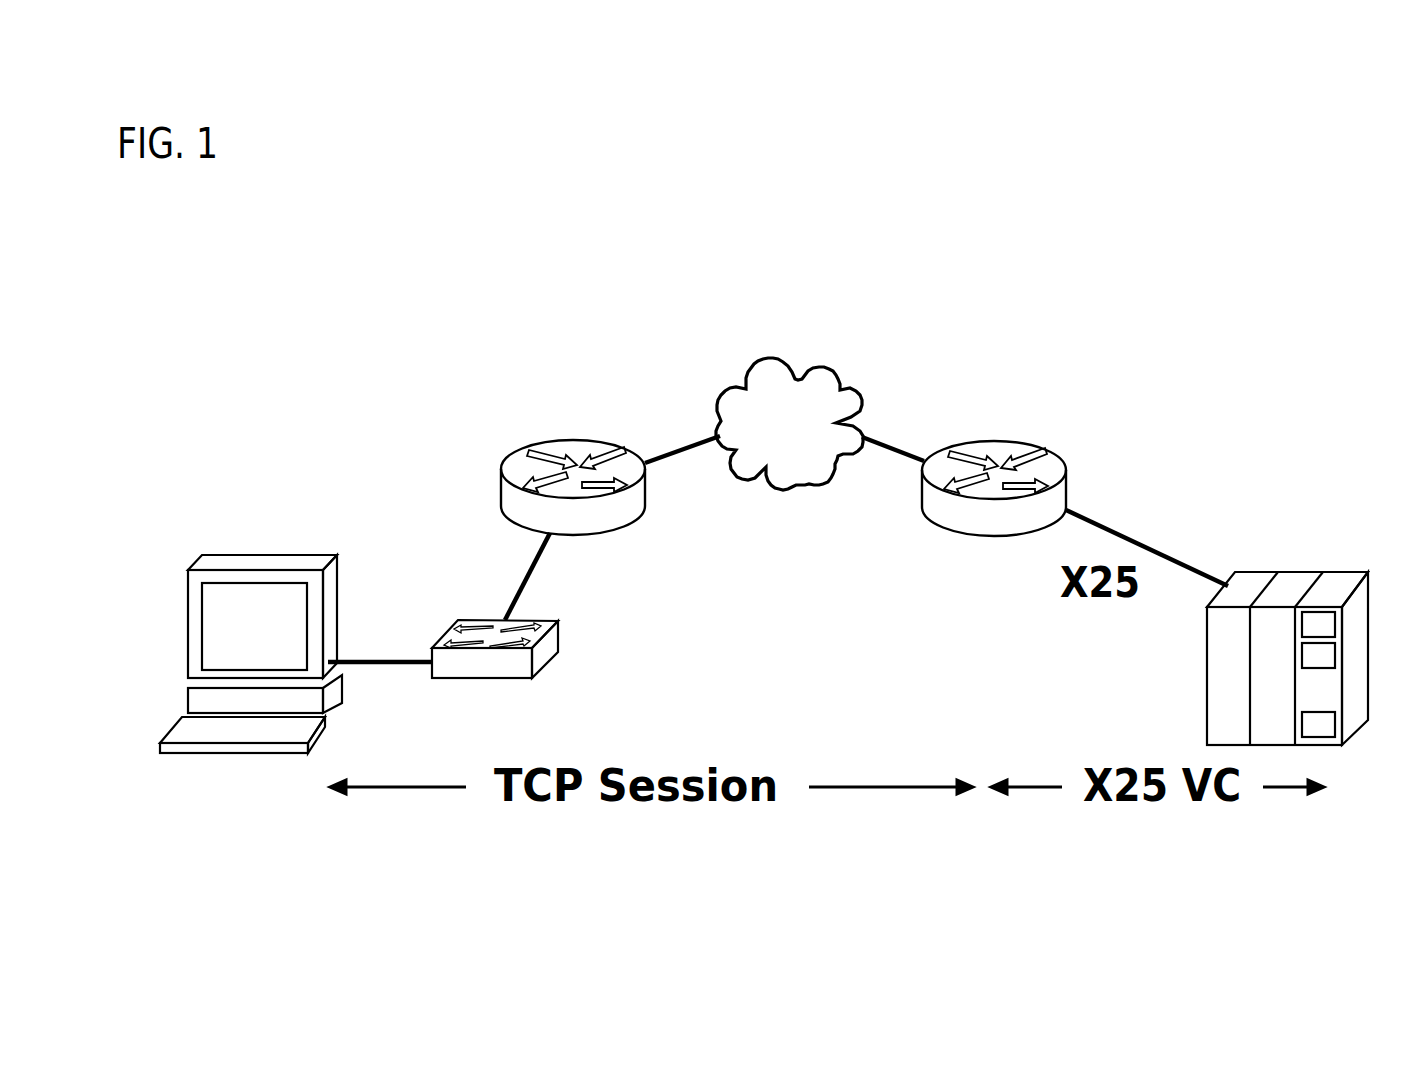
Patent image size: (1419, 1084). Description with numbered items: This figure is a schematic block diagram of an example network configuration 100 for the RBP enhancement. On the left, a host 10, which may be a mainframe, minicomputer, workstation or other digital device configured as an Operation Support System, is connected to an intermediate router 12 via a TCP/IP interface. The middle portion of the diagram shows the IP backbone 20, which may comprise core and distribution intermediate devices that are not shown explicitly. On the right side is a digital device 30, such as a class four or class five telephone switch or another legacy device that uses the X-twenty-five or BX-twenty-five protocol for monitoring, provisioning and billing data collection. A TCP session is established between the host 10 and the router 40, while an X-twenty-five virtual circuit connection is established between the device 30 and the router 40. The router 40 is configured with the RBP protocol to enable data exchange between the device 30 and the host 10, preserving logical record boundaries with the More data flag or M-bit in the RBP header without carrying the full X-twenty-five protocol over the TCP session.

The network system 100 is at (155, 225).
The host 10 is at (251, 604).
The intermediate router 12 is at (540, 435).
The IP backbone 20 is at (786, 350).
The router 40 is at (936, 531).
The digital device 30 is at (1292, 616).